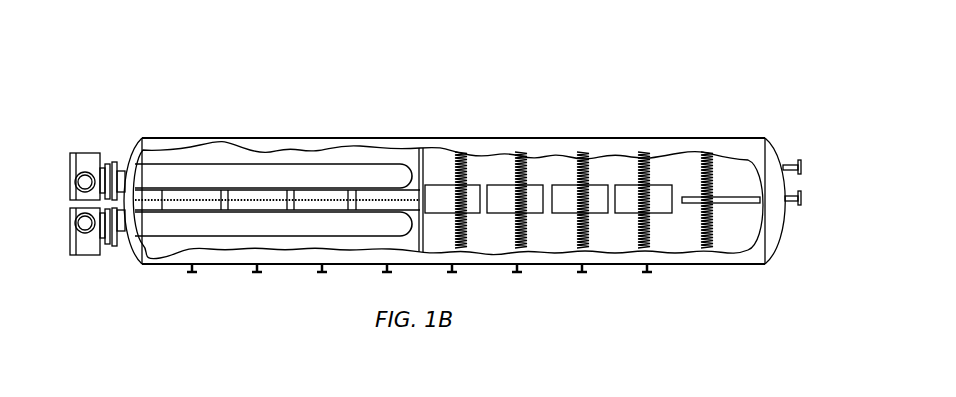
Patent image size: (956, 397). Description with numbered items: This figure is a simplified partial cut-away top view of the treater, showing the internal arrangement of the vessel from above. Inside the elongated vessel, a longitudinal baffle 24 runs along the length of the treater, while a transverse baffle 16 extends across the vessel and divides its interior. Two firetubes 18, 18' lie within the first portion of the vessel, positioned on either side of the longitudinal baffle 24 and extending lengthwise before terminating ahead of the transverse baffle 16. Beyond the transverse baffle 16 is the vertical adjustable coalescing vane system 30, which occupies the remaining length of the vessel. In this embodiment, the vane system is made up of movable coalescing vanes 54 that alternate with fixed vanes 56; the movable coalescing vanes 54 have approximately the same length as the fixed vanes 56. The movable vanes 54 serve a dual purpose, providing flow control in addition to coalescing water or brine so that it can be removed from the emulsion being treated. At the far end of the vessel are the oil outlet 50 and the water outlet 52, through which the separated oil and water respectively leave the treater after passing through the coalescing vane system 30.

The transverse baffle 16 is at (422, 148).
The firetube 18 is at (273, 254).
The firetube 18' is at (273, 147).
The longitudinal baffle 24 is at (225, 168).
The vertical adjustable coalescing vane system 30 is at (454, 130).
The oil outlet 50 is at (800, 167).
The water outlet 52 is at (801, 200).
The movable coalescing vane 54 is at (467, 163).
The fixed vane 56 is at (465, 162).